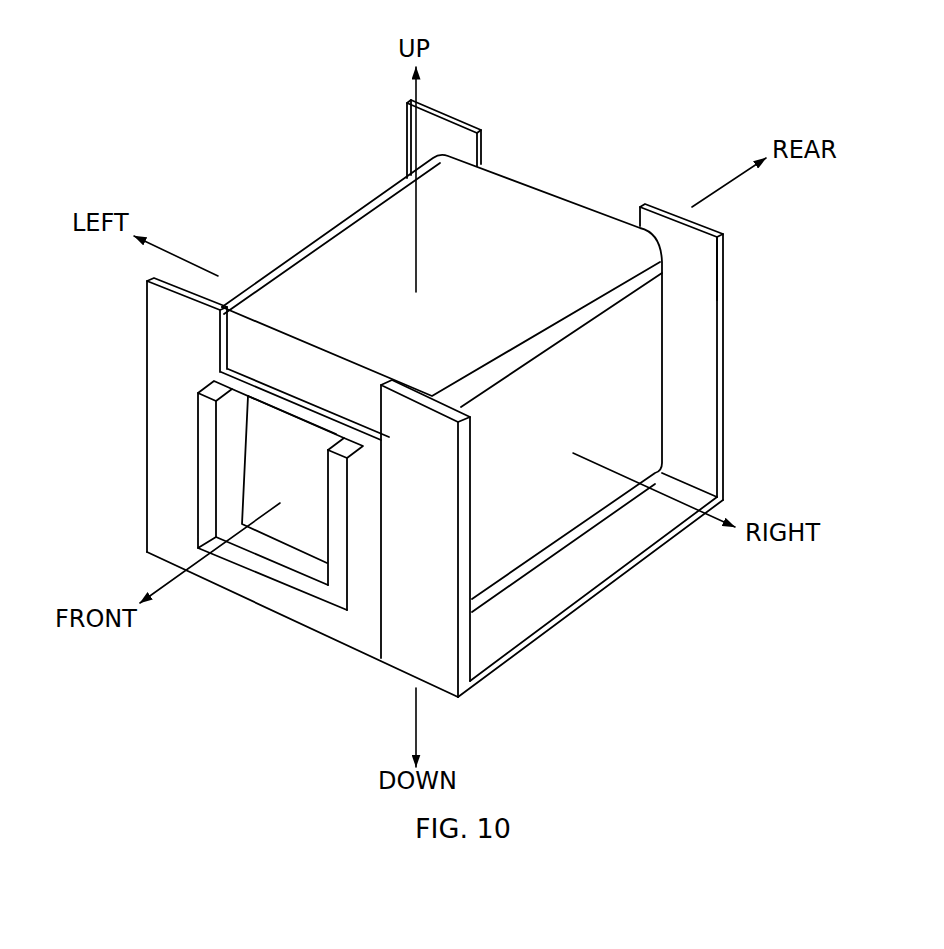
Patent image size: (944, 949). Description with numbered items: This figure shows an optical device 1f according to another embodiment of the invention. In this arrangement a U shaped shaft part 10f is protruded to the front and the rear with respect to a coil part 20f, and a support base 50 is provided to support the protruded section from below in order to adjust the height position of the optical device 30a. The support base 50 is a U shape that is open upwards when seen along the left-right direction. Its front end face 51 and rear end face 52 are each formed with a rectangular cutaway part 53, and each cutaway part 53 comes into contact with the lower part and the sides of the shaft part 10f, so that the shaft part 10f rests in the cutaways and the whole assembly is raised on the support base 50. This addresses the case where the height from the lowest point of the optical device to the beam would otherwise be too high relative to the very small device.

The optical device 1f is at (292, 110).
The coil part 20f is at (340, 265).
The rectangular cutaway part 53 is at (229, 352).
The rear end face 52 is at (677, 252).
The front end face 51 is at (290, 600).
The support base 50 is at (405, 634).
The shaft part 10f is at (205, 455).
The optical device 30a is at (268, 396).